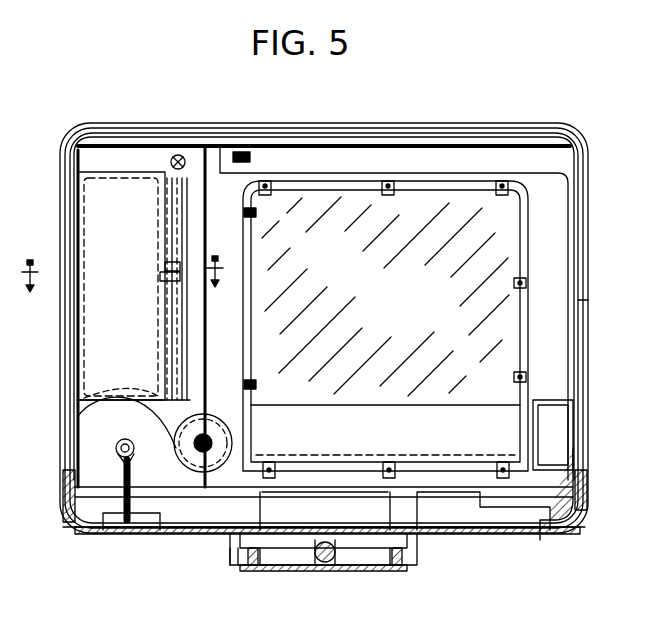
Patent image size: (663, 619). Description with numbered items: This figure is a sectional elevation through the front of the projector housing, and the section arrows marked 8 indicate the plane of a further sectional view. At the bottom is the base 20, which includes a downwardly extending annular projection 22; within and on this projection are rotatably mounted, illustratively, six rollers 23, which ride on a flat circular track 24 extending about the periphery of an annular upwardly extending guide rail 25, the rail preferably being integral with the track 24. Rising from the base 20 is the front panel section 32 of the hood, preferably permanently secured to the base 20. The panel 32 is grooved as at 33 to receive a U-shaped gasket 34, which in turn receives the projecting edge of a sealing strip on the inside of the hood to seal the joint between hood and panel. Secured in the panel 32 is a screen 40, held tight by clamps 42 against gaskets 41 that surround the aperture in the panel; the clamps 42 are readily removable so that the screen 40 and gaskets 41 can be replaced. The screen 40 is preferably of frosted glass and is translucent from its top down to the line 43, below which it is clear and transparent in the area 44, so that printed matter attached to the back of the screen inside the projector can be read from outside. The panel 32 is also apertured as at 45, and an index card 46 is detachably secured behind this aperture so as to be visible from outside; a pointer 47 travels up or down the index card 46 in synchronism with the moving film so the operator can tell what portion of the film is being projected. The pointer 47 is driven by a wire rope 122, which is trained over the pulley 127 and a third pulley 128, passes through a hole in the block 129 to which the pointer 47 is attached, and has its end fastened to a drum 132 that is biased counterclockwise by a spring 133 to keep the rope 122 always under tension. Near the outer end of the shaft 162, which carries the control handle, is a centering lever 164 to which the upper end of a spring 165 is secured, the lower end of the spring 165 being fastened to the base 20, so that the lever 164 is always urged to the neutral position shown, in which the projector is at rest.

The base 20 is at (586, 513).
The downwardly extending annular projection 22 is at (420, 552).
The rollers 23 is at (330, 566).
The flat circular track 24 is at (388, 571).
The annular upwardly extending guide rail 25 is at (240, 567).
The front panel section 32 is at (518, 126).
The groove 33 is at (584, 306).
The U-shaped gasket 34 is at (578, 414).
The screen 40 is at (356, 285).
The gaskets 41 is at (430, 194).
The clamps 42 is at (386, 192).
The line 43 is at (346, 404).
The clear transparent area 44 is at (363, 439).
The aperture 45 is at (122, 178).
The index card 46 is at (162, 177).
The pointer 47 is at (162, 278).
The wire rope 122 is at (220, 165).
The pulley 127 is at (251, 158).
The third pulley 128 is at (183, 156).
The block 129 is at (165, 264).
The drum 132 is at (210, 416).
The spring 133 is at (203, 453).
The shaft 162 is at (123, 439).
The centering lever 164 is at (133, 446).
The spring 165 is at (132, 478).
The section line 8 is at (126, 284).